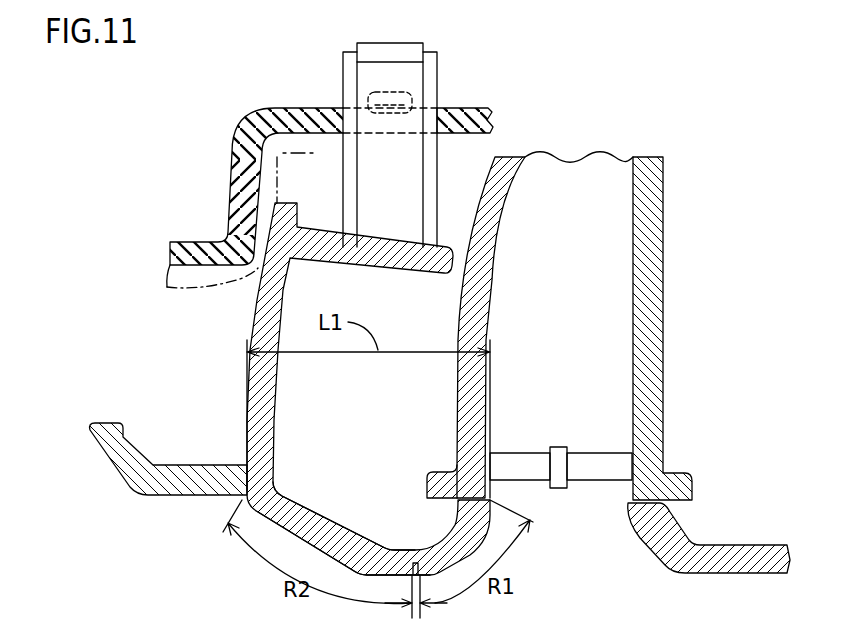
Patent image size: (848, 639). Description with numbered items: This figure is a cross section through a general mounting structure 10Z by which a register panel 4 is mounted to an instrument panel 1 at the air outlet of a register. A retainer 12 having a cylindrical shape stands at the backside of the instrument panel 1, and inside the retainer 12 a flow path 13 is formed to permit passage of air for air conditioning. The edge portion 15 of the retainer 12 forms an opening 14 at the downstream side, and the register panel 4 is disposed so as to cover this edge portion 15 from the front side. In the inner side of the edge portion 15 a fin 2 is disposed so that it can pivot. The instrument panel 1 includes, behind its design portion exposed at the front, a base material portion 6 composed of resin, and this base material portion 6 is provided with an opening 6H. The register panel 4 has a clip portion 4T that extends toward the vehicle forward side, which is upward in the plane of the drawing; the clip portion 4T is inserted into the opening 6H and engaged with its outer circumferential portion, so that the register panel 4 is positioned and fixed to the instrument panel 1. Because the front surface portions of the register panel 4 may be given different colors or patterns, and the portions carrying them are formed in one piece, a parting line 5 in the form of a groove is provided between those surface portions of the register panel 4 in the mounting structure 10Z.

The instrument panel 1 is at (190, 472).
The fin 2 is at (537, 467).
The register panel 4 is at (335, 535).
The clip portion 4T is at (370, 83).
The parting line 5 is at (414, 549).
The base material portion 6 is at (194, 244).
The opening 6H is at (333, 127).
The mounting structure 10Z is at (235, 572).
The retainer 12 is at (643, 258).
The flow path 13 is at (560, 367).
The opening 14 is at (628, 503).
The edge portion 15 is at (440, 482).